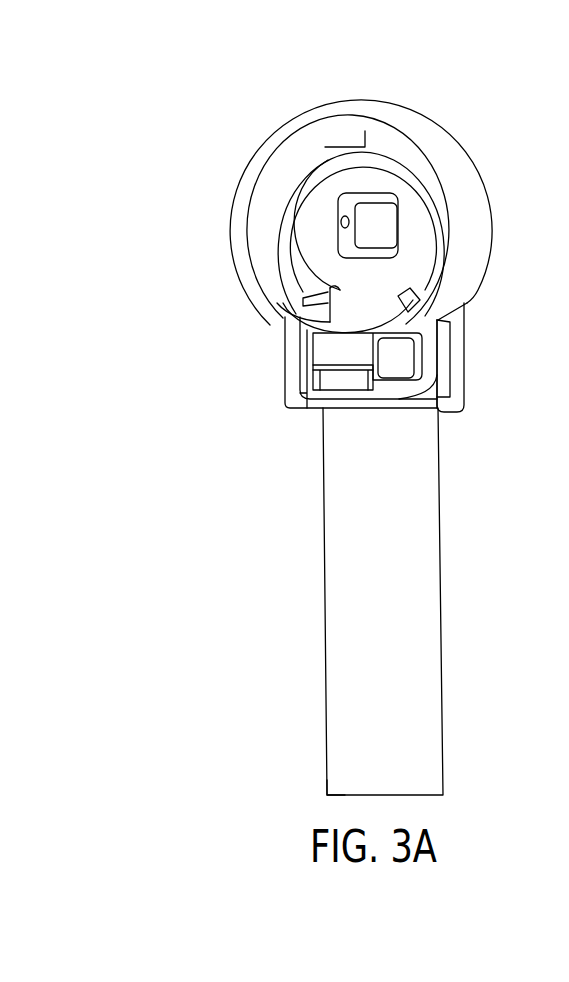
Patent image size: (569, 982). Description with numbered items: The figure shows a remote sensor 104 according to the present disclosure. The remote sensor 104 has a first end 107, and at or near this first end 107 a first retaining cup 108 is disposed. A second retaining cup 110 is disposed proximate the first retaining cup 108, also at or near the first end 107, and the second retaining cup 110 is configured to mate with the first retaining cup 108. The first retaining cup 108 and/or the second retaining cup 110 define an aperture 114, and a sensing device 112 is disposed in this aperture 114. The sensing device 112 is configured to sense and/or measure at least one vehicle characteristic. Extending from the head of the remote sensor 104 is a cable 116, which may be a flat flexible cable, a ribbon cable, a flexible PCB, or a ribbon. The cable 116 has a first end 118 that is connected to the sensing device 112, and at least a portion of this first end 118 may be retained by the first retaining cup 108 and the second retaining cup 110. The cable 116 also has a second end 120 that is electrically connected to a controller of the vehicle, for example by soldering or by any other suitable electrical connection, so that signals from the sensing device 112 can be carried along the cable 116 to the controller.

The remote sensor 104 is at (120, 237).
The first end 107 is at (196, 160).
The first retaining cup 108 is at (298, 118).
The second retaining cup 110 is at (278, 190).
The sensing device 112 is at (352, 225).
The aperture 114 is at (300, 302).
The cable 116 is at (338, 530).
The first end 118 is at (440, 323).
The second end 120 is at (350, 795).